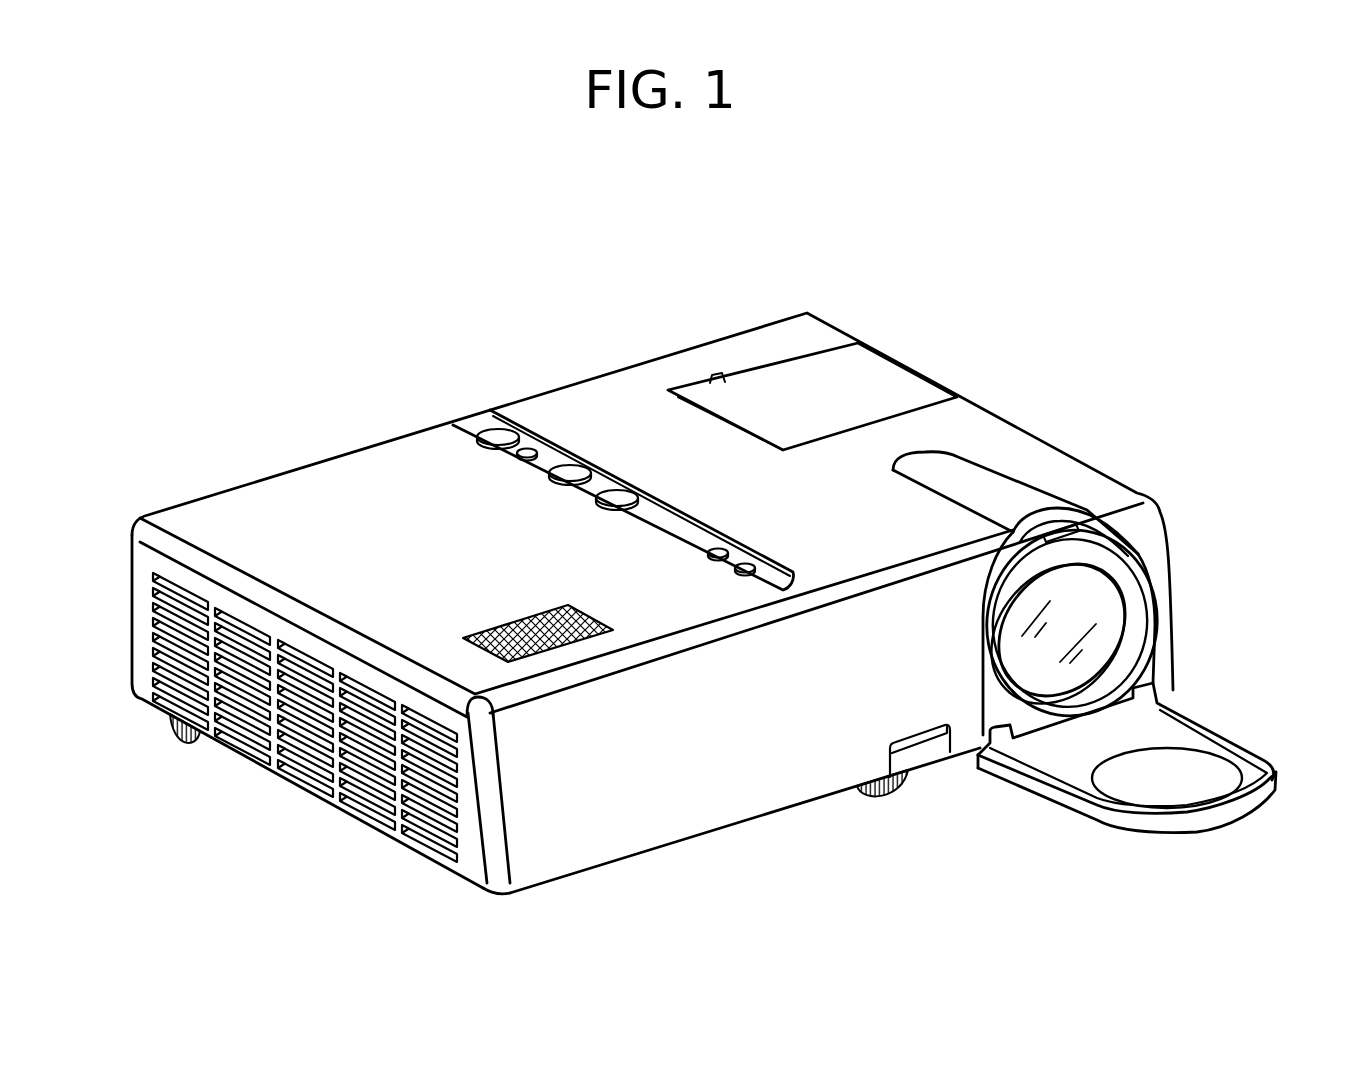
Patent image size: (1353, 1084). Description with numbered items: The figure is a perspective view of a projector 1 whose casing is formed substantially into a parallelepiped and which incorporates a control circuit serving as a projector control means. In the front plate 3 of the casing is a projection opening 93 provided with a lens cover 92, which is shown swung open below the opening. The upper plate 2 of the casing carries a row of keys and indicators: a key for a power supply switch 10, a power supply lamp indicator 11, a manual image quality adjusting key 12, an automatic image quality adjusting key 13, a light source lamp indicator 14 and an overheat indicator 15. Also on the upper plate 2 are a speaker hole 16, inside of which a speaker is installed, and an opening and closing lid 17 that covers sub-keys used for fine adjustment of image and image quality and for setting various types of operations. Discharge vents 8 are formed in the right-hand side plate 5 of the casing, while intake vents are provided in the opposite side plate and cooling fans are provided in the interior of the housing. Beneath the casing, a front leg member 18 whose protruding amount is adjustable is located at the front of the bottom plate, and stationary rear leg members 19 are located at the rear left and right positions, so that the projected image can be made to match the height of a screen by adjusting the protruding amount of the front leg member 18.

The projector 1 is at (802, 284).
The upper plate 2 is at (657, 366).
The front plate 3 is at (668, 830).
The right-hand side plate 5 is at (470, 860).
The discharge vents 8 is at (237, 680).
The key for a power supply switch 10 is at (498, 437).
The power supply lamp indicator 11 is at (533, 450).
The manual image quality adjusting key 12 is at (580, 473).
The automatic image quality adjusting key 13 is at (625, 494).
The light source lamp indicator 14 is at (720, 548).
The overheat indicator 15 is at (747, 563).
The speaker hole 16 is at (528, 615).
The opening and closing lid 17 is at (863, 383).
The front leg member 18 is at (883, 797).
The rear leg member 19 is at (177, 744).
The lens cover 92 is at (1083, 808).
The projection opening 93 is at (1093, 603).